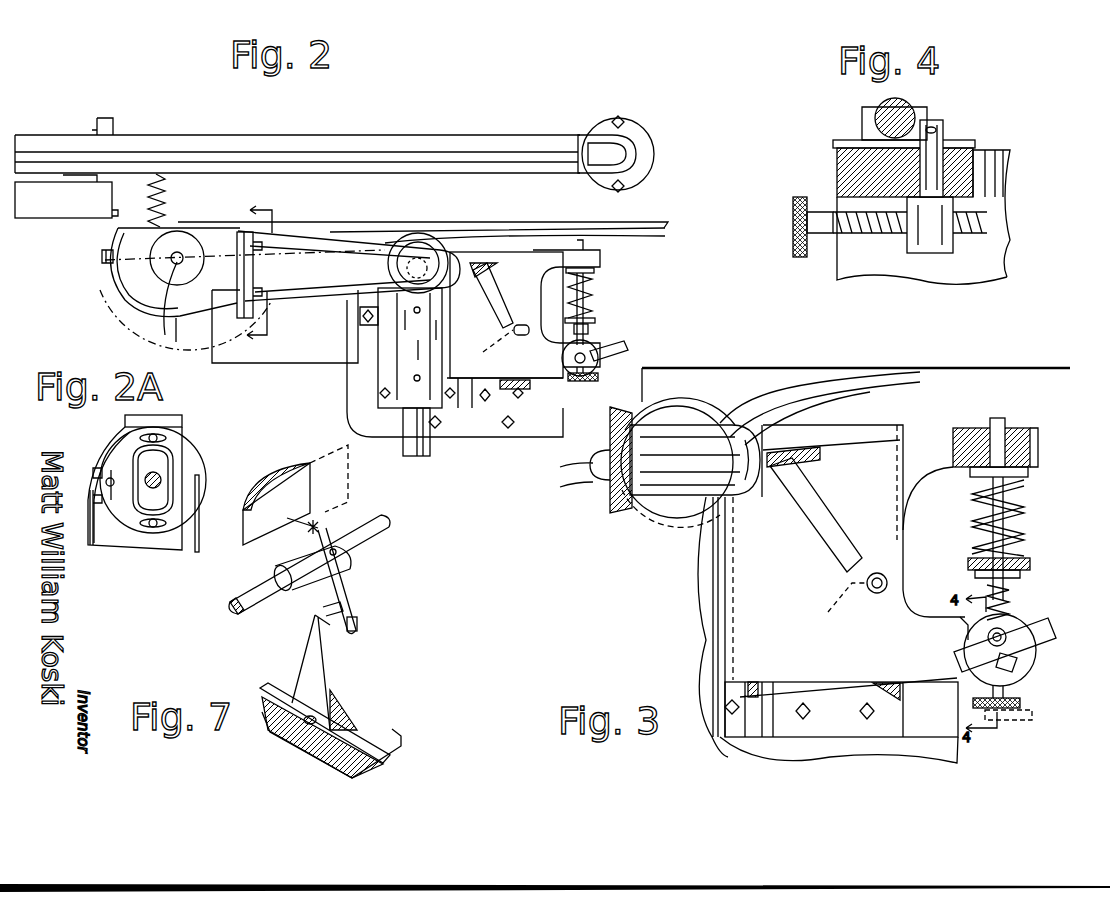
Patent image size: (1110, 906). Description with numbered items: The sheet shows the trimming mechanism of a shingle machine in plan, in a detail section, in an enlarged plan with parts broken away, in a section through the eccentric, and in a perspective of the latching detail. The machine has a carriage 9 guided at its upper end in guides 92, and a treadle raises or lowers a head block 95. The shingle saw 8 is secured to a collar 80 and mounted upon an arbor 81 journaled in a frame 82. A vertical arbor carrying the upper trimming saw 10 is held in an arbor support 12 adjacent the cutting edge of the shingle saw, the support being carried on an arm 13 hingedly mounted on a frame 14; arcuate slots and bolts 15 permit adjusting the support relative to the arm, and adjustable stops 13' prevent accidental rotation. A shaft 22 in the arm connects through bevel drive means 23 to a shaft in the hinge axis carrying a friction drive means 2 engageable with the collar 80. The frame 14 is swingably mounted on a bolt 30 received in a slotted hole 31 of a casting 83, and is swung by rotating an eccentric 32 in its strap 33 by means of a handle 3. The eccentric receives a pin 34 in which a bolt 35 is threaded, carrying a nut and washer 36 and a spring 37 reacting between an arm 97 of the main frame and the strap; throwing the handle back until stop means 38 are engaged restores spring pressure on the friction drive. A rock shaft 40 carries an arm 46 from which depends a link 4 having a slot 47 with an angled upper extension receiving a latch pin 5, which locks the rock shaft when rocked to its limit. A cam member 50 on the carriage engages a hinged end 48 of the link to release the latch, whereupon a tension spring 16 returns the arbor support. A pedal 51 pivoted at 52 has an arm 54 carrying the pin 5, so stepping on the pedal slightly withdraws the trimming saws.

In FIG. 2, the friction drive means 2 is at (427, 238).
In FIG. 3, the friction drive means 2 is at (680, 400).
In FIG. 2, the handle 3 is at (626, 359).
In FIG. 3, the handle 3 is at (1042, 650).
In FIG. 4, the handle 3 is at (892, 120).
In FIG. 7, the link 4 is at (352, 592).
In FIG. 7, the latch pin 5 is at (328, 611).
In FIG. 2, the shingle saw 8 is at (633, 222).
In FIG. 2A, the shingle saw 8 is at (199, 480).
In FIG. 3, the shingle saw 8 is at (990, 368).
In FIG. 7, the carriage 9 is at (303, 497).
In FIG. 2, the upper trimming saw 10 is at (178, 232).
In FIG. 2, the arbor support 12 is at (150, 305).
In FIG. 2A, the arbor support 12 is at (152, 542).
In FIG. 2, the arm 13 is at (349, 271).
In FIG. 3, the arm 13 is at (677, 492).
In FIG. 2, the adjustable stops 13' is at (245, 311).
In FIG. 2A, the adjustable stops 13' is at (92, 486).
In FIG. 2, the frame 14 is at (480, 298).
In FIG. 3, the frame 14 is at (820, 530).
In FIG. 2A, the arcuate slots and bolts 15 is at (112, 500).
In FIG. 2, the tension spring 16 is at (168, 189).
In FIG. 3, the shaft 22 is at (610, 462).
In FIG. 3, the bevel drive means 23 is at (612, 500).
In FIG. 2, the bolt 30 is at (521, 336).
In FIG. 3, the bolt 30 is at (868, 595).
In FIG. 2, the slotted hole 31 is at (485, 351).
In FIG. 3, the slotted hole 31 is at (829, 603).
In FIG. 2, the eccentric 32 is at (575, 384).
In FIG. 3, the eccentric 32 is at (1020, 670).
In FIG. 4, the eccentric 32 is at (868, 168).
In FIG. 4, the strap 33 is at (837, 184).
In FIG. 2, the pin 34 is at (616, 346).
In FIG. 3, the pin 34 is at (1006, 635).
In FIG. 4, the pin 34 is at (935, 148).
In FIG. 2, the bolt 35 is at (592, 332).
In FIG. 3, the bolt 35 is at (1012, 588).
In FIG. 4, the bolt 35 is at (862, 235).
In FIG. 3, the nut and washer 36 is at (980, 585).
In FIG. 2, the spring 37 is at (600, 306).
In FIG. 3, the spring 37 is at (972, 528).
In FIG. 3, the stop means 38 is at (962, 680).
In FIG. 2A, the rock shaft 40 is at (187, 548).
In FIG. 7, the rock shaft 40 is at (240, 612).
In FIG. 7, the arm 46 is at (308, 558).
In FIG. 7, the slot 47 is at (358, 621).
In FIG. 7, the end of link 48 is at (320, 527).
In FIG. 7, the cam member 50 is at (320, 520).
In FIG. 7, the pedal 51 is at (390, 758).
In FIG. 7, the pivot 52 is at (305, 722).
In FIG. 7, the arm 54 is at (322, 670).
In FIG. 2, the collar 80 is at (497, 228).
In FIG. 3, the collar 80 is at (752, 385).
In FIG. 2, the arbor 81 is at (422, 456).
In FIG. 2, the frame 82 is at (380, 428).
In FIG. 3, the frame 82 is at (839, 751).
In FIG. 2, the casting 83 is at (480, 410).
In FIG. 3, the casting 83 is at (841, 707).
In FIG. 2, the guides 92 is at (192, 150).
In FIG. 2, the head block 95 is at (66, 196).
In FIG. 2, the arm 97 is at (598, 260).
In FIG. 3, the arm 97 is at (963, 440).